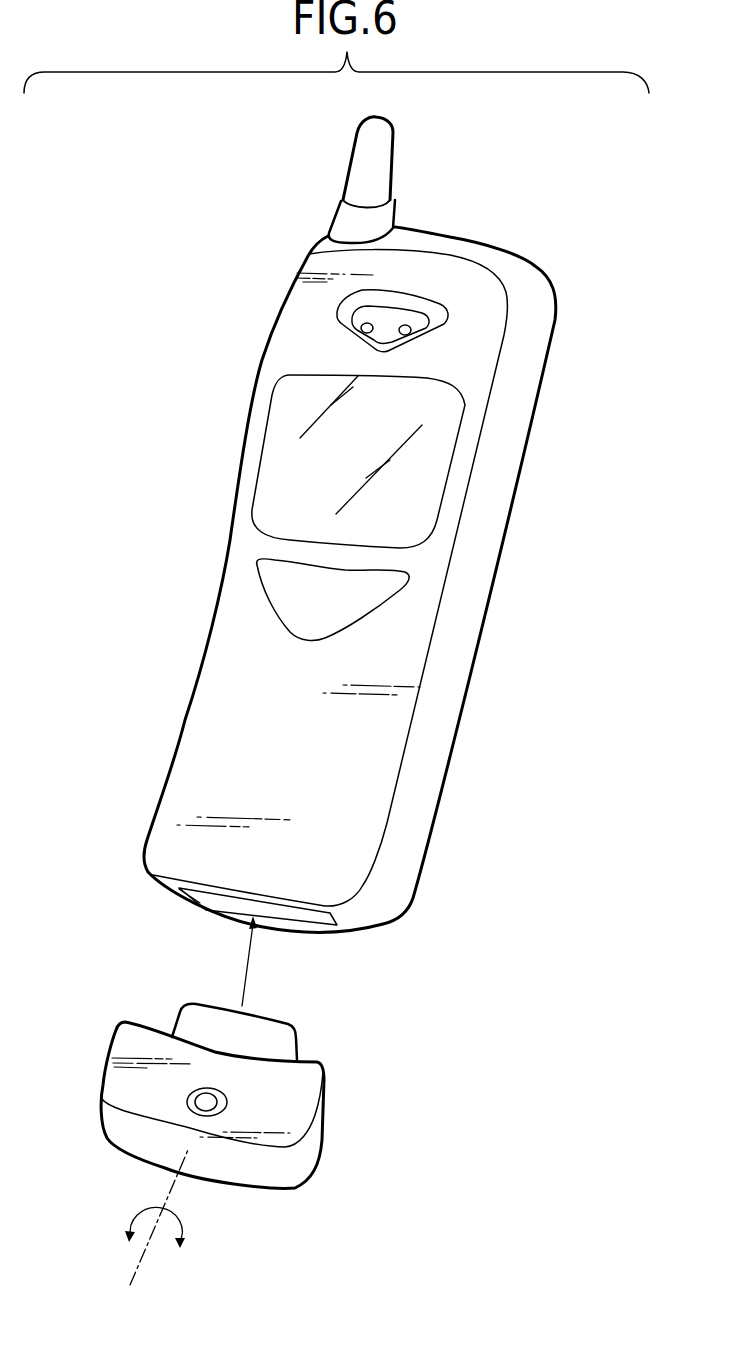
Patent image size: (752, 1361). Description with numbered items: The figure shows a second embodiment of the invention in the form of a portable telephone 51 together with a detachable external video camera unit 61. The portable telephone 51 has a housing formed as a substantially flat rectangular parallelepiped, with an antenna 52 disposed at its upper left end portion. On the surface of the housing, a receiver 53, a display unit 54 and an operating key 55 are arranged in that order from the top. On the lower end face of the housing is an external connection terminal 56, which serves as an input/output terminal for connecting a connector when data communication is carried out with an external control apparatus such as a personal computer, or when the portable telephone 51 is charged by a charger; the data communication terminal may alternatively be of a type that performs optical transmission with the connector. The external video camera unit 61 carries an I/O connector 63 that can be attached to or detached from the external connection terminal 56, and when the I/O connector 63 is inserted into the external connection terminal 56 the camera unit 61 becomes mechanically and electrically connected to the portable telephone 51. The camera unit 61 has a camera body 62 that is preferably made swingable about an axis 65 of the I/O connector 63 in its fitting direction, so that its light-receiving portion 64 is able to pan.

The portable telephone 51 is at (513, 560).
The antenna 52 is at (358, 163).
The receiver 53 is at (403, 315).
The display unit 54 is at (270, 484).
The operating key 55 is at (298, 618).
The external connection terminal 56 is at (211, 904).
The external video camera unit 61 is at (249, 1144).
The camera body 62 is at (242, 1168).
The I/O connector 63 is at (265, 1030).
The light-receiving portion 64 is at (205, 1102).
The axis 65 is at (156, 1217).